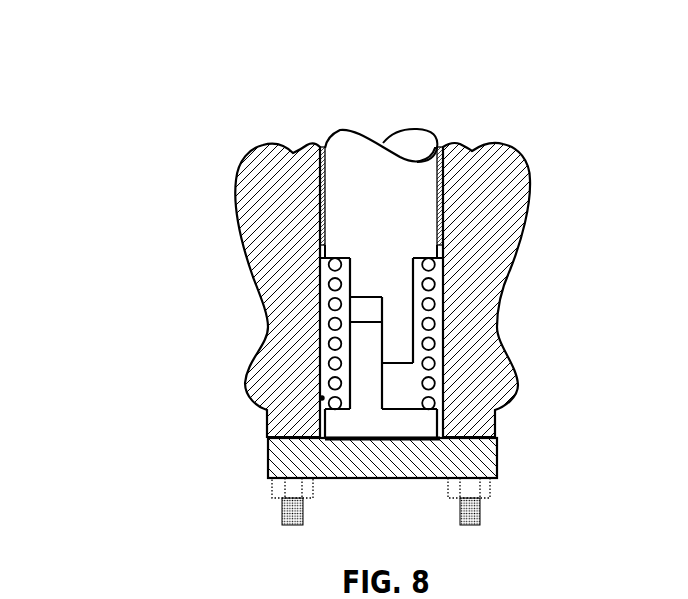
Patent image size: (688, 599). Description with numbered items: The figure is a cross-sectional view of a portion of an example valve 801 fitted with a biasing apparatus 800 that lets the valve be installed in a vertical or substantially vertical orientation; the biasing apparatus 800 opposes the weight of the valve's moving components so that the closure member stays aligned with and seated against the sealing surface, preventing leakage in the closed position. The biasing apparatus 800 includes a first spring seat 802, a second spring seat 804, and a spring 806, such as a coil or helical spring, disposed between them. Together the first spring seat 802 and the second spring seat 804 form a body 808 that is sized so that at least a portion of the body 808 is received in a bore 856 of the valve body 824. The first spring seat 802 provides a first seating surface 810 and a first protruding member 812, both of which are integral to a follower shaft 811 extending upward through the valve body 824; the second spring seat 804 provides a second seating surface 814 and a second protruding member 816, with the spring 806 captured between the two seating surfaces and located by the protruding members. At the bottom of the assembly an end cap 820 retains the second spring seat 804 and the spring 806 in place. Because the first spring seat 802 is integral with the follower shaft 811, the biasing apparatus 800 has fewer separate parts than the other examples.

The valve 801 is at (116, 73).
The body 808 is at (153, 140).
The spring 806 is at (436, 365).
The valve body 824 is at (514, 161).
The biasing apparatus 800 is at (428, 188).
The follower shaft 811 is at (343, 130).
The first spring seat 802 is at (398, 170).
The first seating surface 810 is at (436, 265).
The second protruding member 816 is at (350, 375).
The first protruding member 812 is at (406, 317).
The bore 856 is at (320, 398).
The second spring seat 804 is at (365, 423).
The second seating surface 814 is at (415, 403).
The end cap 820 is at (412, 455).